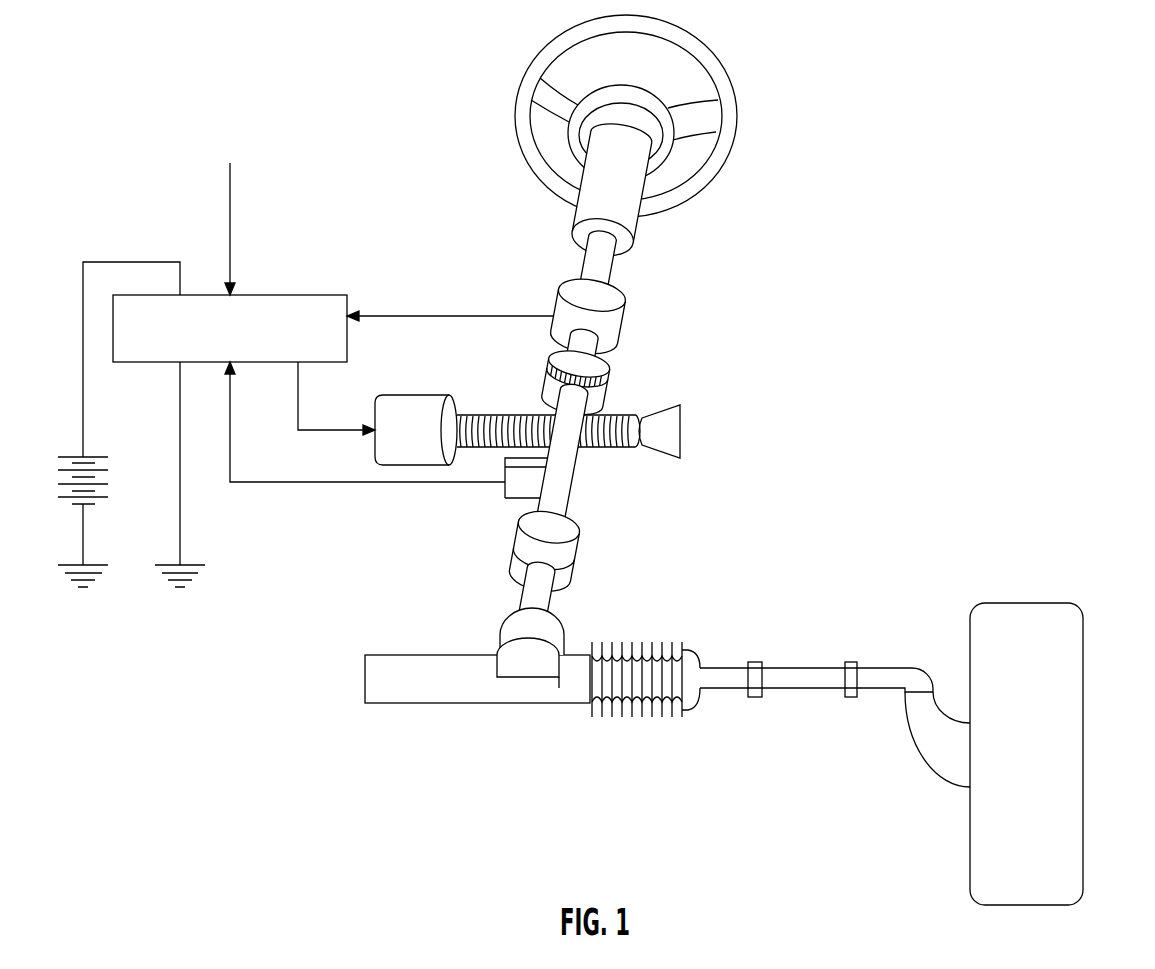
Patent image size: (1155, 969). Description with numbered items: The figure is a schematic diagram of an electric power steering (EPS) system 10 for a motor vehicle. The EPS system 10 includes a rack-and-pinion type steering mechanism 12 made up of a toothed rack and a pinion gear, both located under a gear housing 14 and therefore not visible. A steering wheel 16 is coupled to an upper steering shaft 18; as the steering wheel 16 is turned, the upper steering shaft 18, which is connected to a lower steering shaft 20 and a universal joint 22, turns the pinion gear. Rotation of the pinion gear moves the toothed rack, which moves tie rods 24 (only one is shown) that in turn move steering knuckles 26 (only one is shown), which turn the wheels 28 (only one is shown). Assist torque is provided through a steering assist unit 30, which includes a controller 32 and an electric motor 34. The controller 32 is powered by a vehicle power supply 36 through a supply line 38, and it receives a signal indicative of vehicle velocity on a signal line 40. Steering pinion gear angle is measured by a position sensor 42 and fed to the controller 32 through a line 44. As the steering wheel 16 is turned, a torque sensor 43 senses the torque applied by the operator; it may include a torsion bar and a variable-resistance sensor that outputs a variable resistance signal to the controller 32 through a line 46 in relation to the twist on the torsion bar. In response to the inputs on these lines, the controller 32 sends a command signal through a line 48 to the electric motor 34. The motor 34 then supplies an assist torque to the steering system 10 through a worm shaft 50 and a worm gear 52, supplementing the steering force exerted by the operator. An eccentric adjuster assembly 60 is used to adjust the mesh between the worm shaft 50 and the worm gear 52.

The electric power steering (EPS) system 10 is at (768, 251).
The rack-and-pinion type steering mechanism 12 is at (640, 715).
The gear housing 14 is at (552, 635).
The steering wheel 16 is at (718, 62).
The upper steering shaft 18 is at (590, 272).
The lower steering shaft 20 is at (568, 500).
The universal joint 22 is at (573, 548).
The tie rod 24 is at (813, 690).
The steering knuckle 26 is at (912, 742).
The wheel 28 is at (1085, 624).
The steering assist unit 30 is at (331, 191).
The controller 32 is at (332, 294).
The electric motor 34 is at (433, 405).
The vehicle power supply 36 is at (70, 455).
The supply line 38 is at (98, 258).
The signal line 40 is at (228, 188).
The position sensor 42 is at (510, 492).
The torque sensor 43 is at (618, 312).
The line 44 is at (248, 485).
The line 46 is at (413, 314).
The line 48 is at (300, 400).
The worm shaft 50 is at (613, 448).
The worm gear 52 is at (608, 385).
The eccentric adjuster assembly 60 is at (685, 412).